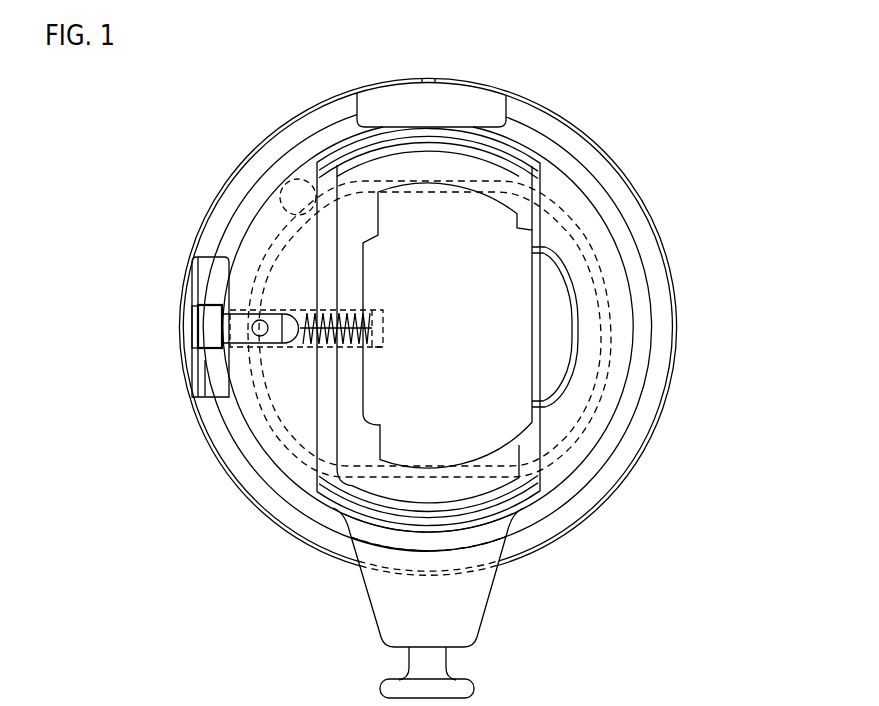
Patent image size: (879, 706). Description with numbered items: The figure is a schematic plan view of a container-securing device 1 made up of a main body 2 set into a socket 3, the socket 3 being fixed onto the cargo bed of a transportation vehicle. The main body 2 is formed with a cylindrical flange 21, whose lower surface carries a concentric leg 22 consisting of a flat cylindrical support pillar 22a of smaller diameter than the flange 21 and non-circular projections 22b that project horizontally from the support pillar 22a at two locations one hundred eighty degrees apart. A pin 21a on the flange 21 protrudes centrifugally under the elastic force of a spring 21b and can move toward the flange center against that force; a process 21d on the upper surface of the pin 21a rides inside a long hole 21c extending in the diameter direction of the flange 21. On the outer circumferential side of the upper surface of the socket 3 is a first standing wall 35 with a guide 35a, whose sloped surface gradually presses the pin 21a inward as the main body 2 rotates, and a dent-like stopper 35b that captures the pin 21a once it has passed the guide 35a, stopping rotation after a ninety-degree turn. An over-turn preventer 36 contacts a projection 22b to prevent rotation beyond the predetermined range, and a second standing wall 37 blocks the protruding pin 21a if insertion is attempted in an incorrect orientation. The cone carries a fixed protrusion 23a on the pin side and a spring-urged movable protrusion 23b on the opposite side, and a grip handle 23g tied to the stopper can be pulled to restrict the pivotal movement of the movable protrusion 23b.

The container-securing device 1 is at (248, 133).
The main body 2 is at (541, 483).
The socket 3 is at (632, 203).
The flange 21 is at (530, 507).
The pin 21a is at (205, 329).
The spring 21b is at (290, 456).
The long hole 21c is at (262, 337).
The process 21d is at (300, 352).
The leg 22 is at (455, 329).
The support pillar 22a is at (582, 366).
The projections 22b is at (604, 306).
The fixed protrusion 23a is at (362, 401).
The movable protrusion 23b is at (548, 283).
The grip handle 23g is at (466, 692).
The first standing wall 35 is at (181, 292).
The guide 35a is at (207, 370).
The stopper 35b is at (193, 316).
The over-turn preventer 36 is at (300, 180).
The second standing wall 37 is at (482, 102).